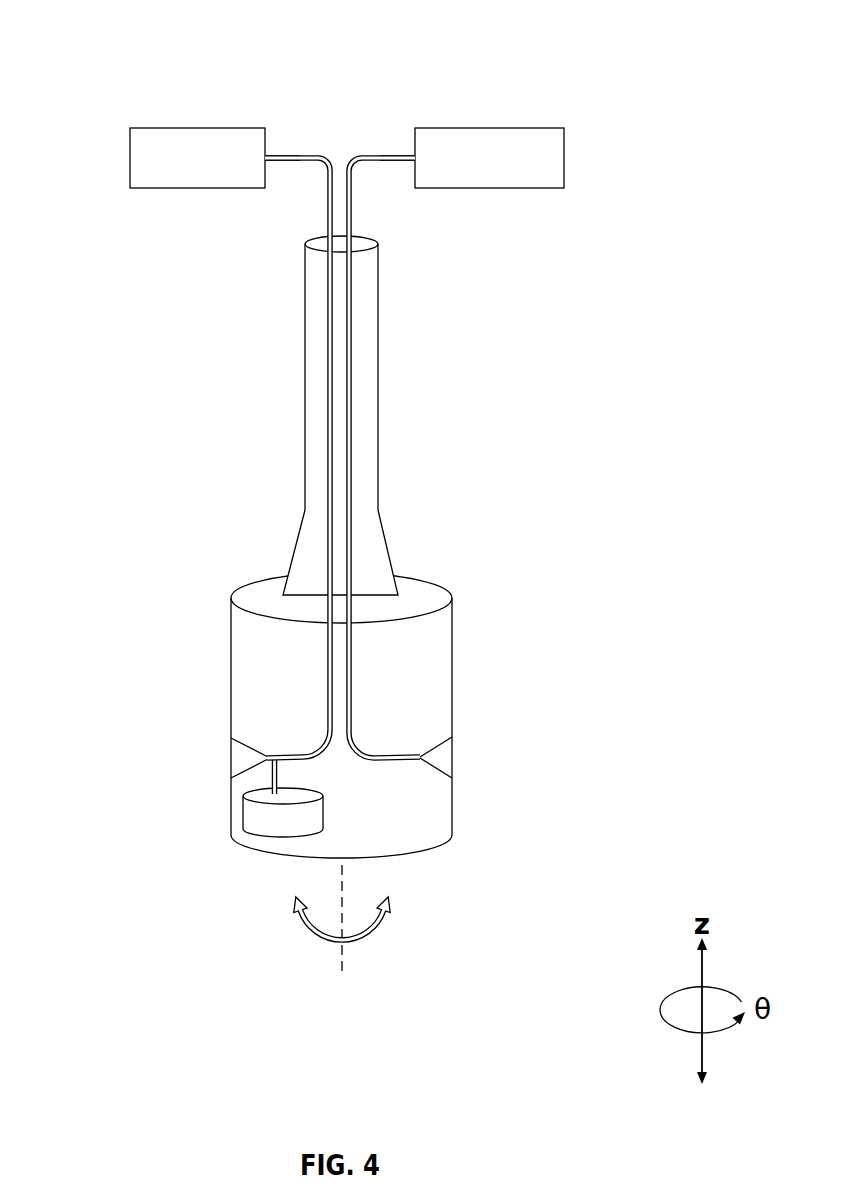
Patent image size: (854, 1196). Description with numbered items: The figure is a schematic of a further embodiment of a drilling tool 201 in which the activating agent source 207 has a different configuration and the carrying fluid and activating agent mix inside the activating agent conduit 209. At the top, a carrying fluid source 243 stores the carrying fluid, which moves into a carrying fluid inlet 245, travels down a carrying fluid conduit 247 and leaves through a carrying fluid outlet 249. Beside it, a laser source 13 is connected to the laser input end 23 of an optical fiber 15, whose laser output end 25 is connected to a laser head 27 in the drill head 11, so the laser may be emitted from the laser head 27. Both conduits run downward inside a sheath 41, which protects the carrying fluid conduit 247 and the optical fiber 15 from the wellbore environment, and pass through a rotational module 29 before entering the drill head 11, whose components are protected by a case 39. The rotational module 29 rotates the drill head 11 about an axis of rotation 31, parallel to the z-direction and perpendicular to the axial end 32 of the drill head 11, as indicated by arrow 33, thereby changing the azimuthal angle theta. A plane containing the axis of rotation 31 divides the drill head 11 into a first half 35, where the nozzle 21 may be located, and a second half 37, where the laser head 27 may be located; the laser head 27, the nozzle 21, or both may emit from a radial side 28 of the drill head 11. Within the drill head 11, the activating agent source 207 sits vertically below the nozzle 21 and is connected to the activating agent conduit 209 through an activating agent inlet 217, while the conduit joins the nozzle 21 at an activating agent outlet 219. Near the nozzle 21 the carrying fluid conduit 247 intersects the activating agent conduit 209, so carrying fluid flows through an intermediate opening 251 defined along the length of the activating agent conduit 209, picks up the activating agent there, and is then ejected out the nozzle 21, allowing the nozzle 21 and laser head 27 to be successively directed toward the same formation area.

The drilling tool 201 is at (672, 37).
The carrying fluid source 243 is at (168, 127).
The laser source 13 is at (529, 127).
The carrying fluid inlet 245 is at (278, 143).
The laser input end 23 is at (402, 143).
The sheath 41 is at (304, 297).
The optical fiber 15 is at (351, 337).
The carrying fluid conduit 247 is at (328, 448).
The rotational module 29 is at (294, 553).
The case 39 is at (422, 574).
The drill head 11 is at (347, 685).
The first half 35 is at (250, 652).
The radial side 28 is at (463, 626).
The second half 37 is at (430, 672).
The activating agent outlet 219 is at (253, 739).
The intermediate opening 251 is at (273, 755).
The nozzle 21 is at (239, 754).
The activating agent conduit 209 is at (263, 773).
The carrying fluid outlet 249 is at (287, 770).
The activating agent inlet 217 is at (230, 843).
The activating agent source 207 is at (264, 805).
The laser head 27 is at (444, 758).
The laser output end 25 is at (425, 773).
The axis of rotation 31 is at (344, 872).
The arrow 33 is at (364, 938).
The axial end 32 is at (264, 868).